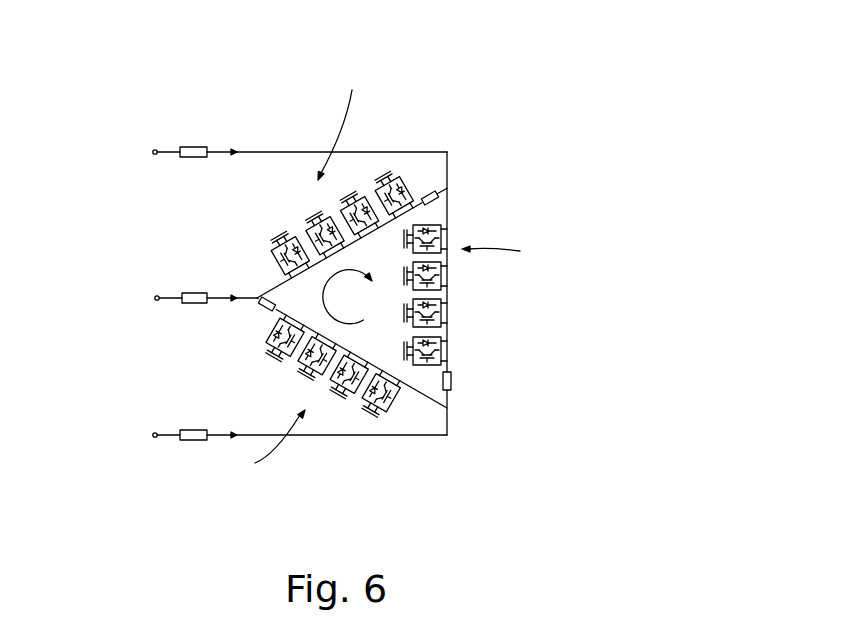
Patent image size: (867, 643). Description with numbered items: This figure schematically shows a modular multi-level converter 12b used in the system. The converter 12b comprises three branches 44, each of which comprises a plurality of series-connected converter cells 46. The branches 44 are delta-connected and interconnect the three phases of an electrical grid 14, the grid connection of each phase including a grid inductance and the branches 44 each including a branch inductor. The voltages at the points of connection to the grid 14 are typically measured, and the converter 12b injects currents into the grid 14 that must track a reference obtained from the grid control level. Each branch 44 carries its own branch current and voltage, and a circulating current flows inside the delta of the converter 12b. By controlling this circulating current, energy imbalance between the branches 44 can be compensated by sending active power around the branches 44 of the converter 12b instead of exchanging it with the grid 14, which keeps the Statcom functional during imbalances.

The electrical grid 14 is at (115, 125).
The branch 44 is at (416, 280).
The modular multi-level converter 12b is at (401, 276).
The converter cell 46 is at (446, 352).